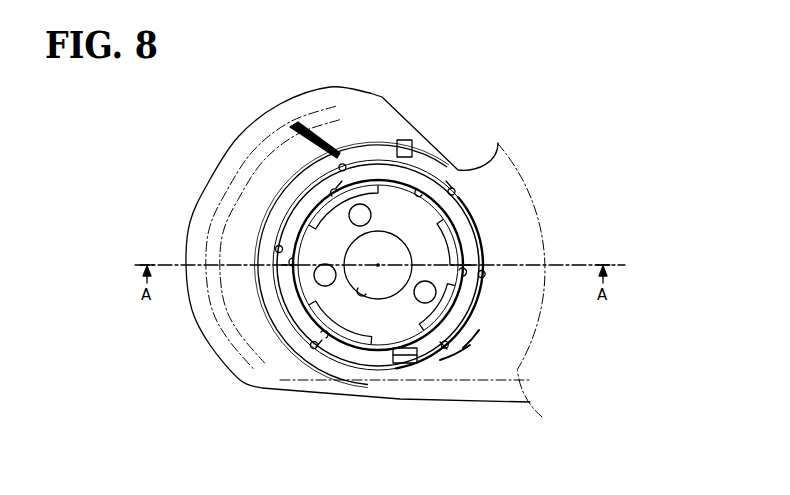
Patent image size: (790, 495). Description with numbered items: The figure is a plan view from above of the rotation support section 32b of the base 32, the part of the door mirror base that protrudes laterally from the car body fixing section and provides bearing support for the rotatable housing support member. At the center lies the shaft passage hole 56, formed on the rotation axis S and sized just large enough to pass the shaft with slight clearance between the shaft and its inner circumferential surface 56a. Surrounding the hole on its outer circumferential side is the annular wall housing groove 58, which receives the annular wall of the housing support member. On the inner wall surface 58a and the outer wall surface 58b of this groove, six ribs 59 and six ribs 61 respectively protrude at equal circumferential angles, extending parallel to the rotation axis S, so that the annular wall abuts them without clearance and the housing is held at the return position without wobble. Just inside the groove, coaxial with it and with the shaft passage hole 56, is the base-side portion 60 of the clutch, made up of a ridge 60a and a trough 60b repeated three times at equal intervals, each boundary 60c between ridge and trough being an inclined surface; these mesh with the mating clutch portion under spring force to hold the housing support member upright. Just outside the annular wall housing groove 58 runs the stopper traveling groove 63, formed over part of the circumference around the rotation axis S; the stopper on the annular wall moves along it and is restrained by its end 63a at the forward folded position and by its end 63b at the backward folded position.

The base 32 is at (622, 83).
The rotation support section 32b is at (530, 235).
The shaft passage hole 56 is at (374, 298).
The inner circumferential surface 56a is at (358, 294).
The annular wall housing groove 58 is at (468, 323).
The inner wall surface 58a is at (462, 343).
The outer wall surface 58b is at (457, 340).
The ribs 59 is at (332, 178).
The base-side portion of the clutch 60 is at (314, 212).
The ridge 60a is at (357, 190).
The trough 60b is at (448, 201).
The boundary 60c is at (368, 195).
The ribs 61 is at (345, 190).
The stopper traveling groove 63 is at (302, 305).
The end 63a is at (328, 352).
The end 63b is at (375, 160).
The rotation axis S is at (378, 265).